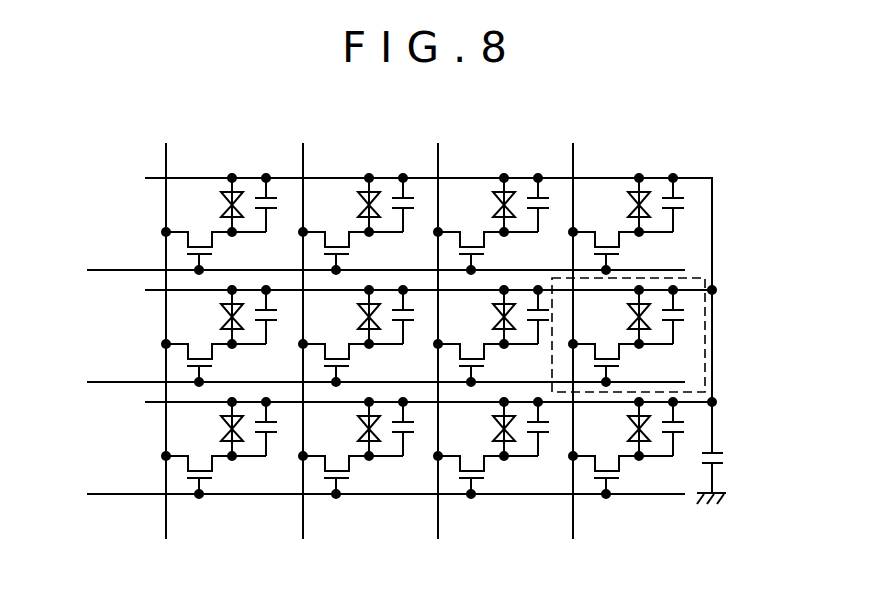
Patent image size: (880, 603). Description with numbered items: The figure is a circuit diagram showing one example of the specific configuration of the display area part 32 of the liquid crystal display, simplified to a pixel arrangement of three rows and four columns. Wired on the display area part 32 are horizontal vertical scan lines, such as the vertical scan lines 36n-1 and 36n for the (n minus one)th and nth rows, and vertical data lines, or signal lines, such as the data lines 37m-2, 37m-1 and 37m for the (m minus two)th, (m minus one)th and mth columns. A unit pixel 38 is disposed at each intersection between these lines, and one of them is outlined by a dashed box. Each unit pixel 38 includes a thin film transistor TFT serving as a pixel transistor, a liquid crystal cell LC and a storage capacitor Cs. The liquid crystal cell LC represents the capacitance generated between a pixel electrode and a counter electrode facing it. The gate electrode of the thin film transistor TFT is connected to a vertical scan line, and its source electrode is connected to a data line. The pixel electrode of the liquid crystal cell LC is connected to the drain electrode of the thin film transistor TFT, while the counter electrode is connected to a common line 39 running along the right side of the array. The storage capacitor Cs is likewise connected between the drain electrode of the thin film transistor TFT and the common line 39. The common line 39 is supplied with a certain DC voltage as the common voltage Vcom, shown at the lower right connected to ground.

The display area part 32 is at (610, 162).
The common line 39 is at (712, 222).
The unit pixel 38 is at (660, 335).
The vertical scan line 36n-1 is at (115, 270).
The vertical scan line 36n is at (115, 382).
The data line 37m-2 is at (166, 527).
The data line 37m-1 is at (303, 527).
The data line 37m is at (438, 527).
The liquid crystal cell LC is at (627, 316).
The storage capacitor Cs is at (684, 314).
The thin film transistor TFT is at (612, 350).
The common voltage Vcom is at (739, 476).